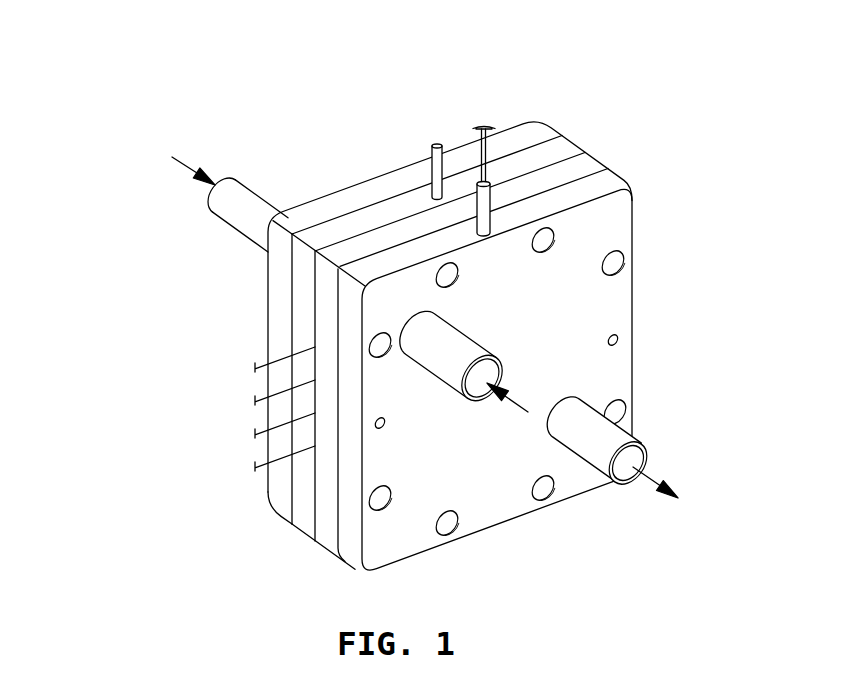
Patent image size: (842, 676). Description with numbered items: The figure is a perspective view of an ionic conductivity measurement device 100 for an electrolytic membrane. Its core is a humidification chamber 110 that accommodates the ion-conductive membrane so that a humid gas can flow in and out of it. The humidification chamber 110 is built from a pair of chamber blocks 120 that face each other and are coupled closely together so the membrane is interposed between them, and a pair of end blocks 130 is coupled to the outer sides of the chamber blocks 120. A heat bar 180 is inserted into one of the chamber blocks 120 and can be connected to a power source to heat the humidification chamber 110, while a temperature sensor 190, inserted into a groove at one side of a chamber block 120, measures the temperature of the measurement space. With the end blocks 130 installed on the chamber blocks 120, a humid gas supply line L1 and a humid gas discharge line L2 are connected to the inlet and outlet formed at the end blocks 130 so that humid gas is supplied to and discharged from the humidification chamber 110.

The ionic conductivity measurement device 100 is at (133, 117).
The humidification chamber 110 is at (653, 3).
The chamber blocks 120 is at (572, 175).
The end blocks 130 is at (545, 208).
The heat bar 180 is at (475, 183).
The temperature sensor 190 is at (428, 150).
The humid gas supply line L1 is at (468, 348).
The humid gas discharge line L2 is at (595, 418).